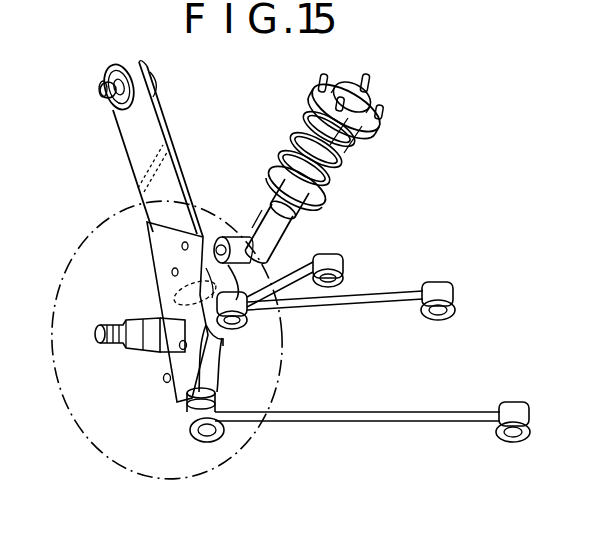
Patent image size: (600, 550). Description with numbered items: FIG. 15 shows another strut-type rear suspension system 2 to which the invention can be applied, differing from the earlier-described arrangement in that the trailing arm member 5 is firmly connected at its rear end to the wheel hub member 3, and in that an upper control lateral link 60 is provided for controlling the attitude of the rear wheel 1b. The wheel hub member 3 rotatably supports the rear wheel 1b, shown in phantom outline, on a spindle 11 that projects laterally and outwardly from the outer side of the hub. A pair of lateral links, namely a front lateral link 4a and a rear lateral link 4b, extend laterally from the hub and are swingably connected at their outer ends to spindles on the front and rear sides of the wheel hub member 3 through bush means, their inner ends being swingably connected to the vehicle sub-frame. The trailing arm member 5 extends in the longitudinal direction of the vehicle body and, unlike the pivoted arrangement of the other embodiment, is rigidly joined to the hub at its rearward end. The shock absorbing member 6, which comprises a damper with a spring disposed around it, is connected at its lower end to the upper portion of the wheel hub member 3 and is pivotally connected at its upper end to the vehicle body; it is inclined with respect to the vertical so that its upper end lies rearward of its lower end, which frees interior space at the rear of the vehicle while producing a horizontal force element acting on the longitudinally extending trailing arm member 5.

The strut-type rear suspension system 2 is at (378, 224).
The wheel hub member 3 is at (158, 302).
The trailing arm member 5 is at (152, 134).
The shock absorbing member 6 is at (330, 196).
The spindle 11 is at (112, 348).
The rear wheel 1b is at (247, 431).
The front lateral link 4a is at (294, 256).
The rear lateral link 4b is at (406, 421).
The upper control lateral link 60 is at (372, 296).